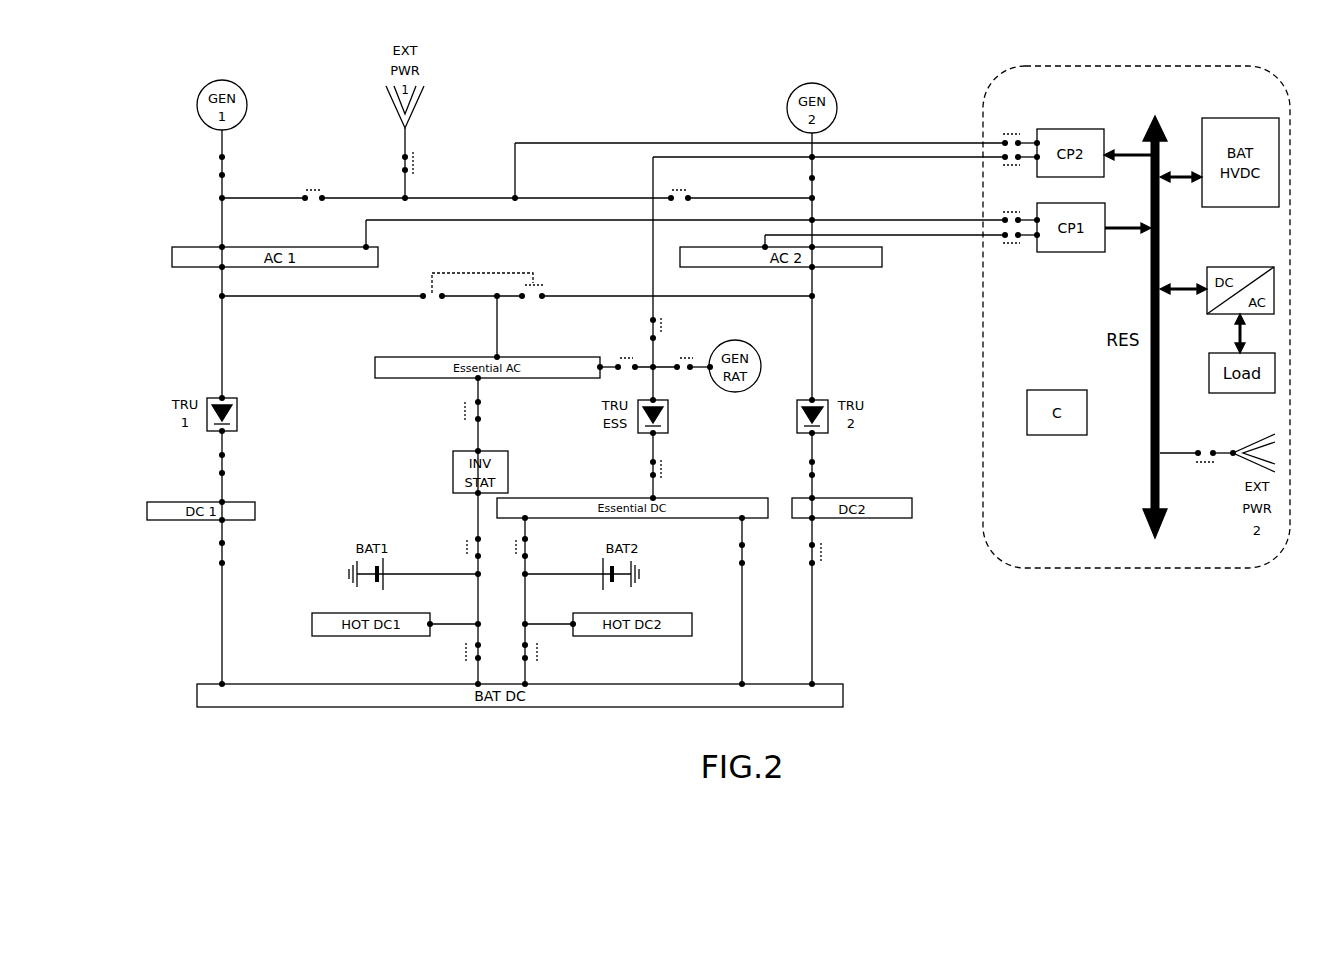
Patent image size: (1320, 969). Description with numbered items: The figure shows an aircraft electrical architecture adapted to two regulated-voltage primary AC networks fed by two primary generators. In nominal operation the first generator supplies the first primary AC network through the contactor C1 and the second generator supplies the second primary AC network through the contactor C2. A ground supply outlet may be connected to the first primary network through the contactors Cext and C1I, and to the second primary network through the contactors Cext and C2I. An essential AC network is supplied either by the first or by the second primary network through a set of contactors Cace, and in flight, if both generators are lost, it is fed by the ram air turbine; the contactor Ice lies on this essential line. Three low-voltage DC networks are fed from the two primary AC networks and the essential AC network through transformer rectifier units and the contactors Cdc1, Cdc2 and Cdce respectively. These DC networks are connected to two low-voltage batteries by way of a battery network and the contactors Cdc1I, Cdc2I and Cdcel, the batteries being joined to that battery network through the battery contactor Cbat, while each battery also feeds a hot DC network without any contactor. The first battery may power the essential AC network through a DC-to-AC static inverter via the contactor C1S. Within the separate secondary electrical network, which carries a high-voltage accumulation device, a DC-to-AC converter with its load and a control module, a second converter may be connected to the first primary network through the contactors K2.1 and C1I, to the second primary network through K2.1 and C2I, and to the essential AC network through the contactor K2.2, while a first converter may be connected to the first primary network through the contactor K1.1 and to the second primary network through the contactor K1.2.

The contactor C1 is at (236, 166).
The contactor C1I is at (315, 185).
The contactor Cext is at (428, 166).
The contactor C2 is at (826, 173).
The contactor C2I is at (682, 185).
The set of contactors Cace is at (482, 274).
The contactor Ice is at (668, 329).
The contactor Cdc1 is at (243, 465).
The contactor Cdc1I is at (250, 553).
The contactor Cdce is at (679, 469).
The contactor Cdc2 is at (836, 469).
The contactor Cdcel is at (769, 554).
The contactor Cdc2I is at (843, 554).
The contactor C1S is at (478, 550).
The contactor Cbat is at (501, 652).
The contactor K2.1 is at (1013, 132).
The contactor K2.2 is at (1013, 168).
The contactor K1.1 is at (1013, 209).
The contactor K1.2 is at (1013, 246).